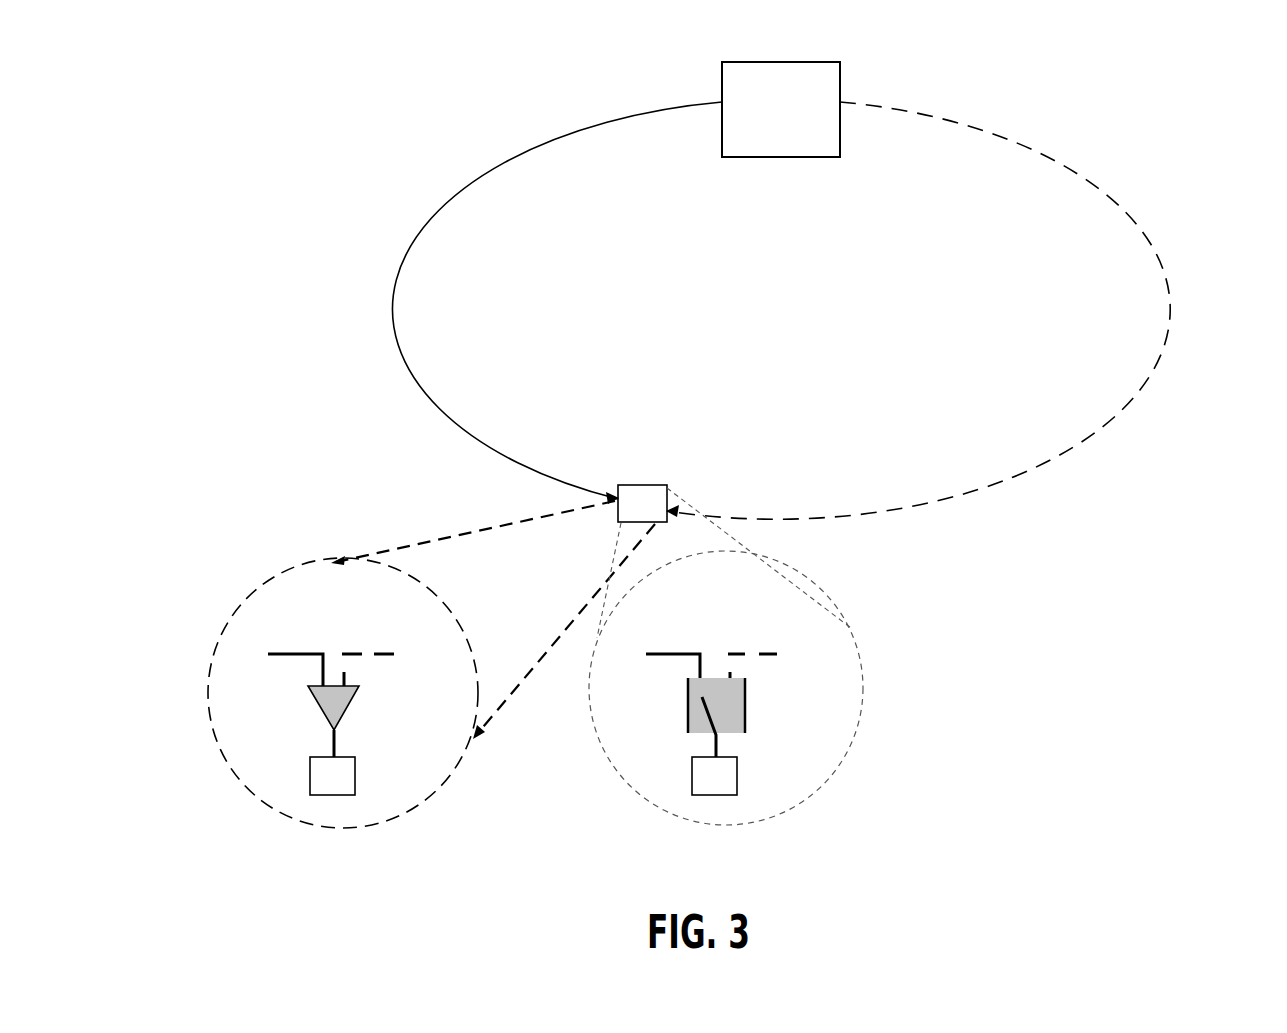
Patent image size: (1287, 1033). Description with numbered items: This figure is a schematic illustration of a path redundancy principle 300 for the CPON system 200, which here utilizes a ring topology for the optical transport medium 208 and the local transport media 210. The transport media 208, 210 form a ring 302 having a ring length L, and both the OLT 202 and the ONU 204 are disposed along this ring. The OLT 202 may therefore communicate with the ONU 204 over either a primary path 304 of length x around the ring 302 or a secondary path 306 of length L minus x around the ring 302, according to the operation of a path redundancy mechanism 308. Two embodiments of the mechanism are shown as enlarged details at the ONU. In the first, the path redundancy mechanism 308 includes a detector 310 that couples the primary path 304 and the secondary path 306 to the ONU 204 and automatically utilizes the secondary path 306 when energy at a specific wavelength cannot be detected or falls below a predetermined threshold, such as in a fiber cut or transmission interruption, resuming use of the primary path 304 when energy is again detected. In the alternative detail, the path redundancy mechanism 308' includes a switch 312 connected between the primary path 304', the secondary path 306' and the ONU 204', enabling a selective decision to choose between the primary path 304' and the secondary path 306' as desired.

The path redundancy principle 300 is at (1216, 93).
The OLT 202 is at (799, 150).
The CPON system 200 is at (786, 308).
The optical transport medium 208 is at (403, 250).
The local transport media 210 is at (699, 395).
The ring 302 is at (372, 303).
The primary path 304 is at (475, 395).
The secondary path 306 is at (756, 395).
The ONU 204 is at (481, 647).
The path redundancy mechanism 308 is at (429, 664).
The detector 310 is at (357, 697).
The path redundancy mechanism 308' is at (764, 656).
The primary path 304' is at (654, 674).
The secondary path 306' is at (779, 674).
The switch 312 is at (746, 697).
The ONU 204' is at (673, 807).